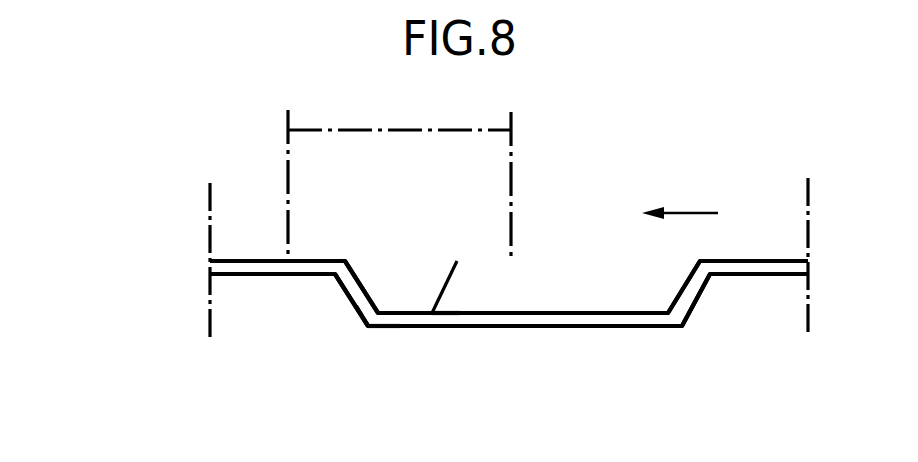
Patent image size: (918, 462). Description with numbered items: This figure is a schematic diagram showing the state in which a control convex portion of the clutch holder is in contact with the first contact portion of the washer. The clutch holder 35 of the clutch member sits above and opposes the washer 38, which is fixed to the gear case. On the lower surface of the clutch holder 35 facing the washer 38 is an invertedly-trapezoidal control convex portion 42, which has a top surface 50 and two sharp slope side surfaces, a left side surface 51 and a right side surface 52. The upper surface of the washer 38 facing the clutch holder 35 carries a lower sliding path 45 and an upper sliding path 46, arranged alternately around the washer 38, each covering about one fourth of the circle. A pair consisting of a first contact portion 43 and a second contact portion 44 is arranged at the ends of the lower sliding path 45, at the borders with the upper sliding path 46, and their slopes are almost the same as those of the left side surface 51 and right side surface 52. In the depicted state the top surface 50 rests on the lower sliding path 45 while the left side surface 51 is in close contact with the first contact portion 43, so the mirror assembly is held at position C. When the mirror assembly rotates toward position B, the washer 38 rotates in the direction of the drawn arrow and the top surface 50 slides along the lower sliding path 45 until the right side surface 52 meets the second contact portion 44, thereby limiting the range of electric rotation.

The clutch holder 35 is at (513, 160).
The washer 38 is at (692, 315).
The control convex portion 42 is at (405, 287).
The first contact portion 43 is at (364, 297).
The second contact portion 44 is at (687, 285).
The lower sliding path 45 is at (522, 313).
The upper sliding path 46 is at (242, 259).
The top surface 50 is at (390, 313).
The left side surface 51 is at (366, 300).
The right side surface 52 is at (432, 314).